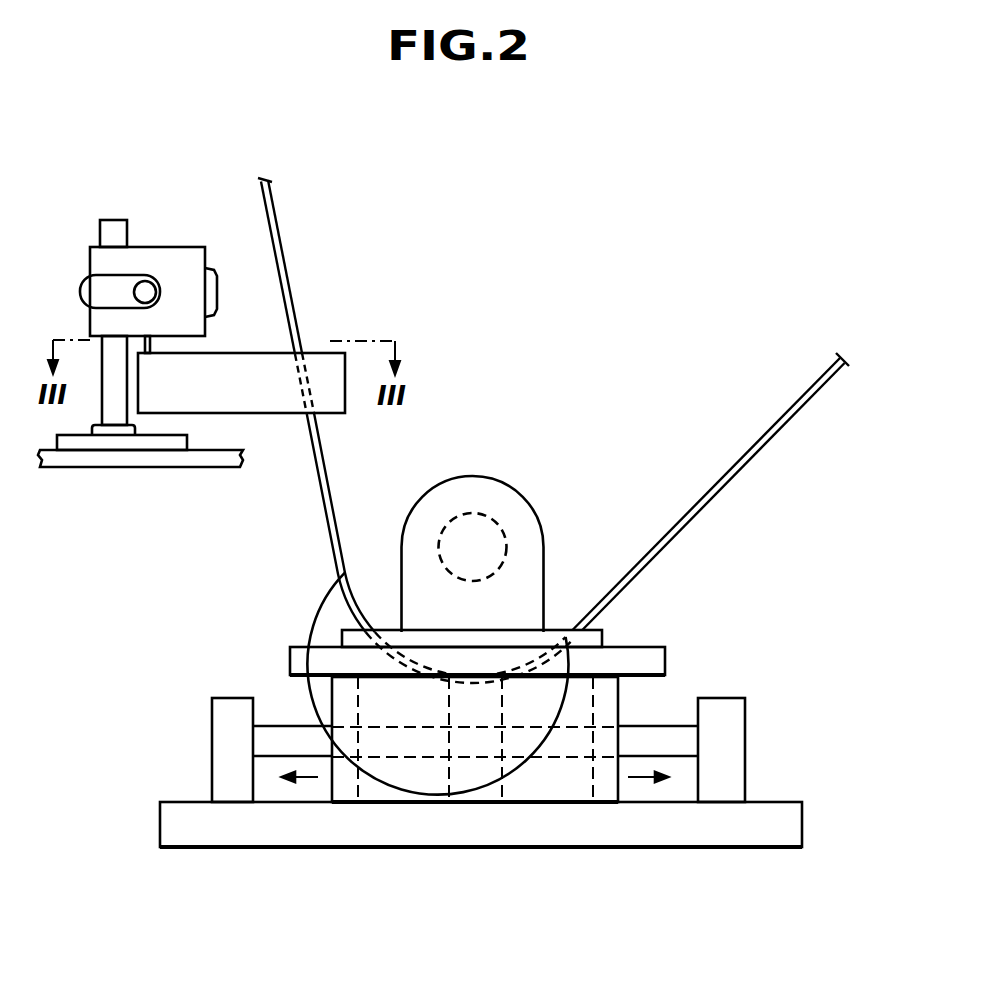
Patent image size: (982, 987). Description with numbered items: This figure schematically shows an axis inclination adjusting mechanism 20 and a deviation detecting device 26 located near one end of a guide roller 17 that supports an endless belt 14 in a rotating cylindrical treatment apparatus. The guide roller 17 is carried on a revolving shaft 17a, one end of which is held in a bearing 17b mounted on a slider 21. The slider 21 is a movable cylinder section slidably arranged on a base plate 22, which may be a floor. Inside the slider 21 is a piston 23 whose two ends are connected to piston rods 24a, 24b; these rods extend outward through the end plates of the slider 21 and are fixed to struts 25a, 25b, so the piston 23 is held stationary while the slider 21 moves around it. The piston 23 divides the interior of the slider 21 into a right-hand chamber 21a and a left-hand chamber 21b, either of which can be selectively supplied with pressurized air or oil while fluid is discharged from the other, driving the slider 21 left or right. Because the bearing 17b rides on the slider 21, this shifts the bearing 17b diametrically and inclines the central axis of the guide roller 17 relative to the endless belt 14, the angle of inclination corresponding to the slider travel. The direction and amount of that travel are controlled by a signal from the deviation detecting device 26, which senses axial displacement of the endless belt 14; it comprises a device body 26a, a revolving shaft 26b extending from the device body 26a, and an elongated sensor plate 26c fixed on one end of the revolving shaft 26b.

The endless belt 14 is at (293, 292).
The guide roller 17 is at (483, 585).
The revolving shaft 17a is at (473, 513).
The bearing 17b is at (533, 525).
The axis inclination adjusting mechanism 20 is at (675, 663).
The slider 21 is at (482, 795).
The right-hand chamber 21a is at (575, 793).
The left-hand chamber 21b is at (413, 787).
The base plate 22 is at (318, 835).
The piston 23 is at (478, 782).
The piston rod 24a is at (652, 740).
The piston rod 24b is at (290, 740).
The strut 25a is at (737, 737).
The strut 25b is at (222, 737).
The deviation detecting device 26 is at (191, 322).
The device body 26a is at (191, 257).
The revolving shaft 26b is at (150, 348).
The sensor plate 26c is at (280, 413).